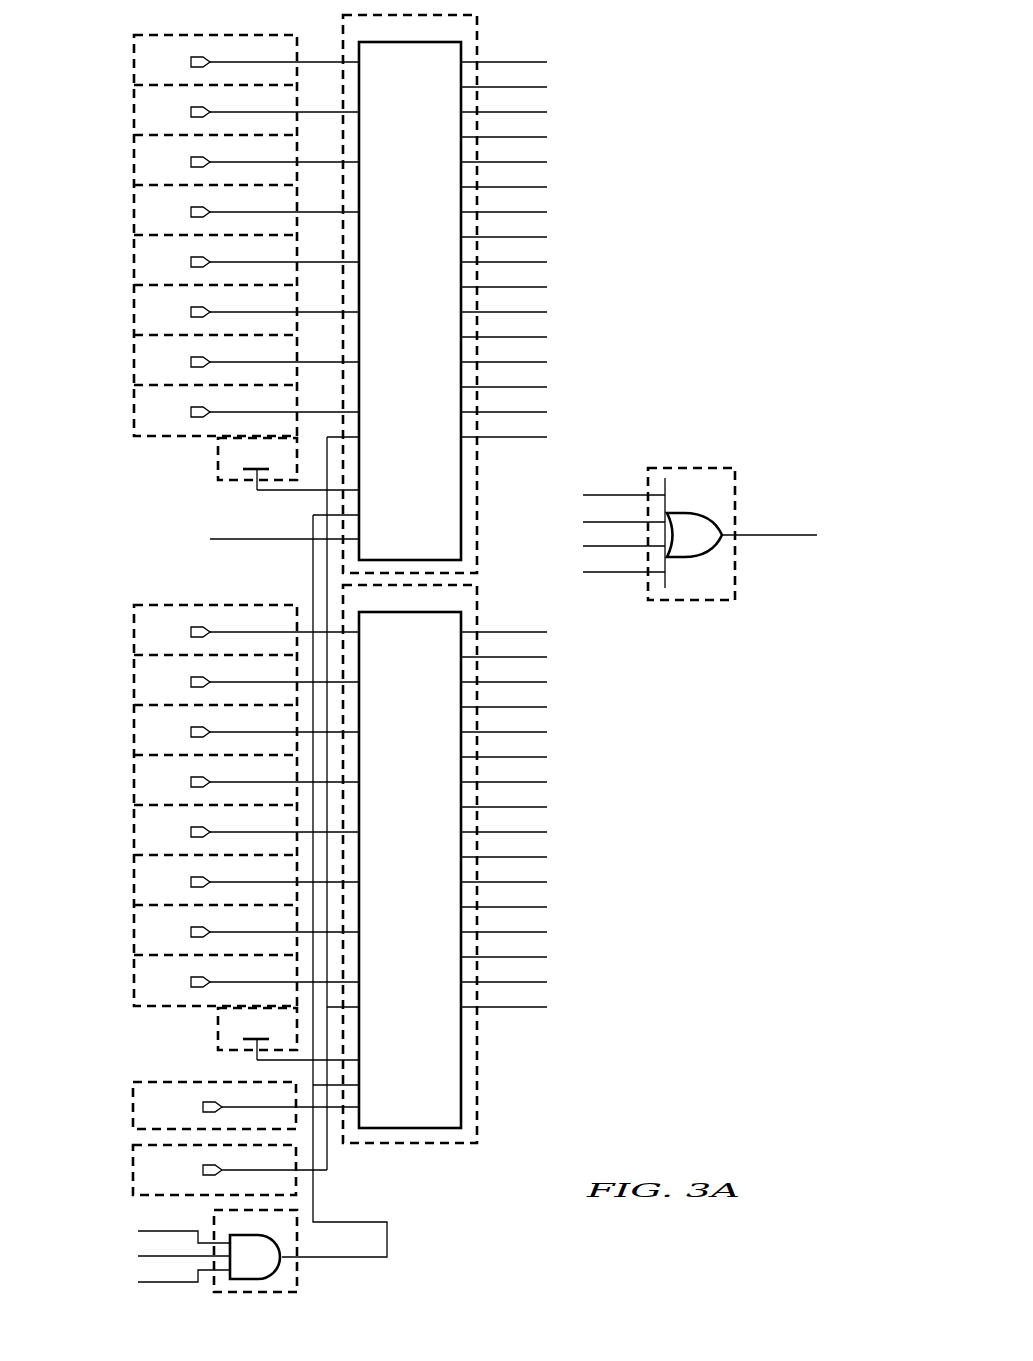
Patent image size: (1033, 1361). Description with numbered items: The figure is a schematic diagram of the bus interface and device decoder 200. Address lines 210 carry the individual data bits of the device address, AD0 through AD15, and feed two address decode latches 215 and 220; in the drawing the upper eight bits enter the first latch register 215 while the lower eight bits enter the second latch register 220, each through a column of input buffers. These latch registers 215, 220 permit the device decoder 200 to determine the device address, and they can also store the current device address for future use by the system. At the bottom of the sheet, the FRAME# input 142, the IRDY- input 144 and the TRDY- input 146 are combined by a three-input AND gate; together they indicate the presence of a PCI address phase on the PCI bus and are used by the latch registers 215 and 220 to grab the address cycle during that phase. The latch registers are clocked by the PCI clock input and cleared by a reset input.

The bus interface and device decoder 200 is at (650, 83).
The address lines 210 is at (164, 437).
The address decode latch 215 is at (461, 490).
The address decode latch 220 is at (461, 1058).
The FRAME# input 142 is at (133, 1217).
The IRDY- input 144 is at (133, 1243).
The TRDY- input 146 is at (133, 1271).